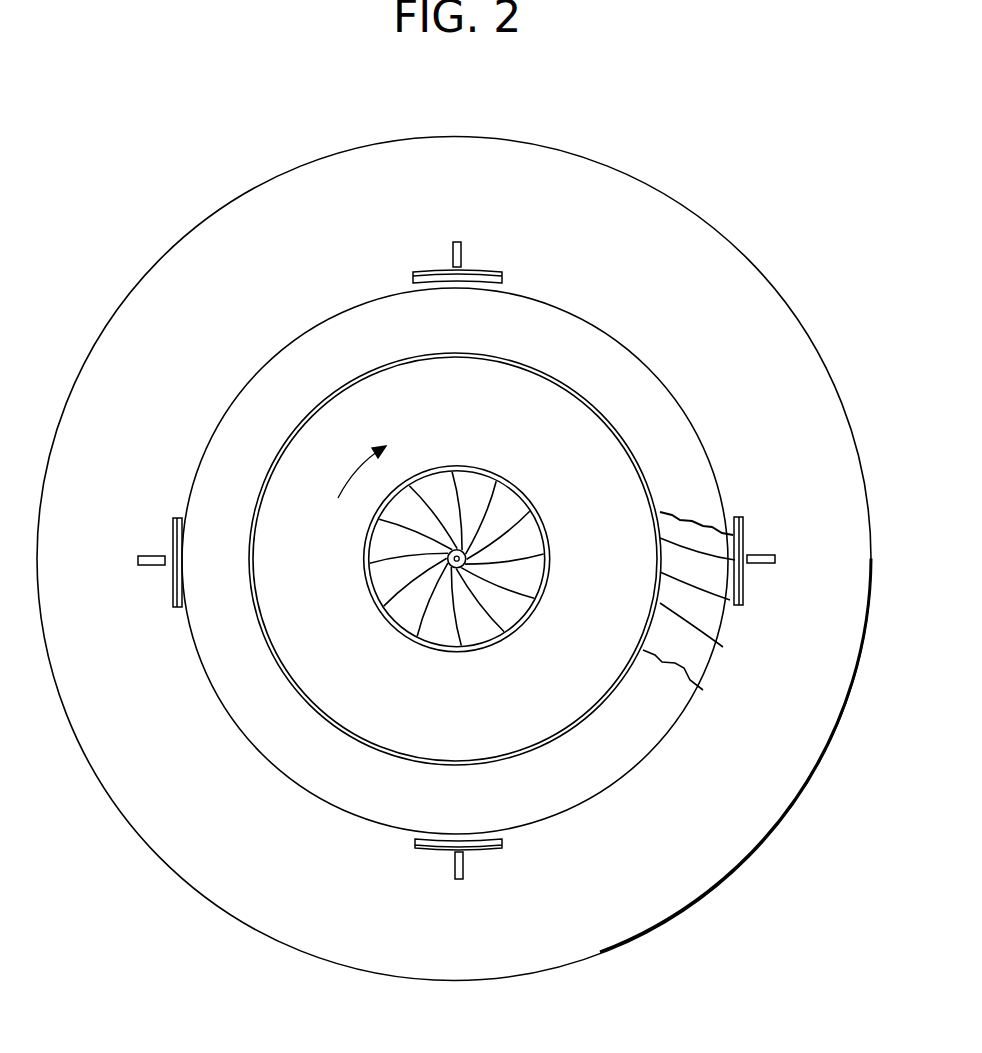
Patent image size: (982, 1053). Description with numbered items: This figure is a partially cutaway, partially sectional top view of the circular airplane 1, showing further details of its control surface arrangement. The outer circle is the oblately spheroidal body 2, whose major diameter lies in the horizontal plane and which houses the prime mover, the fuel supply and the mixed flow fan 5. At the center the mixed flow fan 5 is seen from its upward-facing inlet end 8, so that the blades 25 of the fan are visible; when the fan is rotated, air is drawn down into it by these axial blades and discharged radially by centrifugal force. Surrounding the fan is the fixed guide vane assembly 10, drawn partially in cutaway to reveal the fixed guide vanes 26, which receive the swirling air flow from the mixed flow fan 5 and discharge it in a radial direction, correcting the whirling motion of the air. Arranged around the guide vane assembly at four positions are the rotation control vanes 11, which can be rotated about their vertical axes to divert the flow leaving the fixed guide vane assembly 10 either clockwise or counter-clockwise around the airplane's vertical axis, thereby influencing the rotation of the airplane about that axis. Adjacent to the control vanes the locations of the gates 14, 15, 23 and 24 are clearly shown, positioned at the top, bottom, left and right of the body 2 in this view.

The circular airplane 1 is at (197, 938).
The oblately spheroidal body 2 is at (180, 810).
The mixed flow fan 5 is at (568, 692).
The inlet end 8 is at (532, 540).
The fixed guide vane assembly 10 is at (272, 386).
The rotation control vanes 11 is at (458, 255).
The gate 14 is at (175, 588).
The gate 15 is at (743, 530).
The gate 23 is at (440, 845).
The gate 24 is at (430, 273).
The blades 25 is at (517, 528).
The fixed guide vanes 26 is at (717, 643).